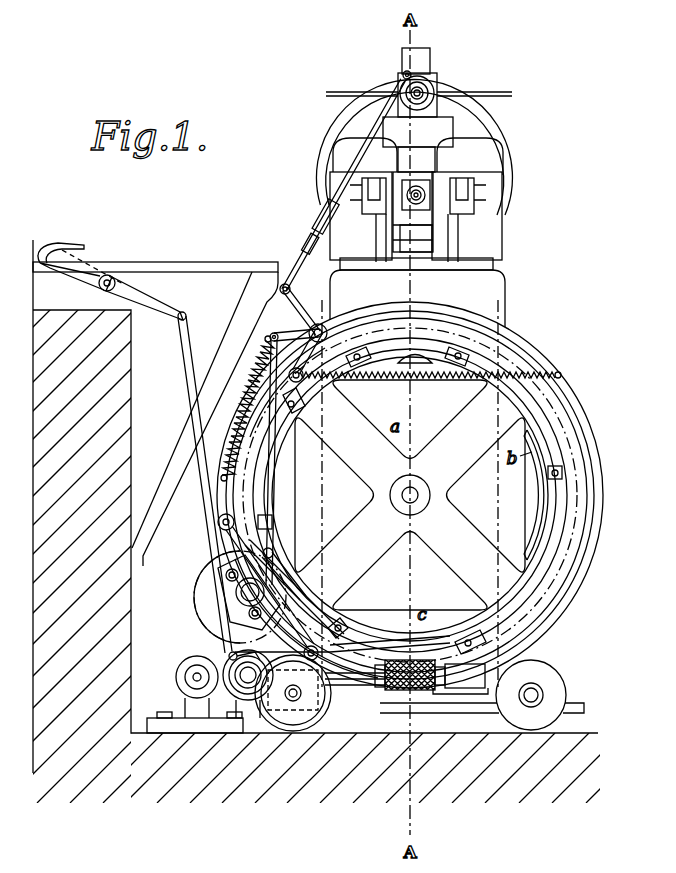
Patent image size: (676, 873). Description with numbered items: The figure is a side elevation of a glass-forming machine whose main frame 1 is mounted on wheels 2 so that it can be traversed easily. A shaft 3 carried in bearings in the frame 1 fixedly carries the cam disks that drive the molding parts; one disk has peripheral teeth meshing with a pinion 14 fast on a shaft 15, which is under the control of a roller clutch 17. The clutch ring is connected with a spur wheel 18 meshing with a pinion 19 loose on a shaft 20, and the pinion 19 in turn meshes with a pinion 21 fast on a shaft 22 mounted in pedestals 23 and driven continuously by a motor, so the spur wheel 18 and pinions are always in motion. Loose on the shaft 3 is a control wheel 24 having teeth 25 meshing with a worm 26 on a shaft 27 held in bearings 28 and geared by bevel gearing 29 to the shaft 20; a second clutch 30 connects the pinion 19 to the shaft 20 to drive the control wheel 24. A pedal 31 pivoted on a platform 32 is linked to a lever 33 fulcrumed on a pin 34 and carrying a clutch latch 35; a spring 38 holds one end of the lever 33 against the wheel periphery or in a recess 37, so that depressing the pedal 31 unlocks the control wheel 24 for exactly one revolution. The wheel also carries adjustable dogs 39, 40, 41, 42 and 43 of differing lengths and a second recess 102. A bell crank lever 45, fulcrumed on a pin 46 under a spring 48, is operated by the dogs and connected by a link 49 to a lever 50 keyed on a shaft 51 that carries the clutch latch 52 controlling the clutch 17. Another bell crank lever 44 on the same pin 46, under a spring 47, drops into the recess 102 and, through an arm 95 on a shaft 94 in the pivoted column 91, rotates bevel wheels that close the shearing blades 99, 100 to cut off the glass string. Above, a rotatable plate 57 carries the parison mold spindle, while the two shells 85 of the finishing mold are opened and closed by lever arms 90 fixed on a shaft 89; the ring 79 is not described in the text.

The main frame 1 is at (417, 298).
The wheels 2 is at (308, 722).
The shaft 3 is at (416, 495).
The pinion 14 is at (240, 594).
The shaft 15 is at (249, 614).
The clutch 17 is at (222, 640).
The spur wheel 18 is at (200, 565).
The pinion 19 is at (240, 690).
The shaft 20 is at (248, 676).
The pinion 21 is at (195, 678).
The shaft 22 is at (197, 679).
The pedestals 23 is at (195, 714).
The control wheel 24 is at (536, 508).
The teeth 25 is at (578, 597).
The worm 26 is at (421, 692).
The shaft 27 is at (361, 686).
The bearings 28 is at (468, 690).
The bevel gearing 29 is at (270, 706).
The clutch 30 is at (229, 656).
The pedal 31 is at (60, 250).
The platform 32 is at (158, 270).
The lever 33 is at (355, 632).
The pin 34 is at (333, 625).
The clutch latch 35 is at (296, 622).
The recess 37 is at (365, 642).
The spring 38 is at (294, 696).
The dog 39 is at (426, 364).
The dog 40 is at (550, 474).
The dog 41 is at (474, 642).
The dog 42 is at (340, 630).
The dog 43 is at (262, 468).
The bell crank lever 44 is at (271, 343).
The bell crank lever 45 is at (307, 331).
The pin 46 is at (322, 326).
The spring 47 is at (383, 383).
The spring 48 is at (250, 398).
The link 49 is at (290, 376).
The lever 50 is at (272, 522).
The shaft 51 is at (217, 523).
The clutch latch 52 is at (272, 552).
The plate 57 is at (456, 130).
The ring 79 is at (503, 134).
The shells of the finishing mold 85 is at (416, 217).
The shaft 89 is at (493, 262).
The lever arms 90 is at (362, 210).
The column 91 is at (430, 62).
The shaft 94 is at (434, 94).
The arm 95 is at (403, 73).
The shearing blade 99 is at (372, 92).
The shearing blade 100 is at (470, 94).
The recess 102 is at (300, 410).